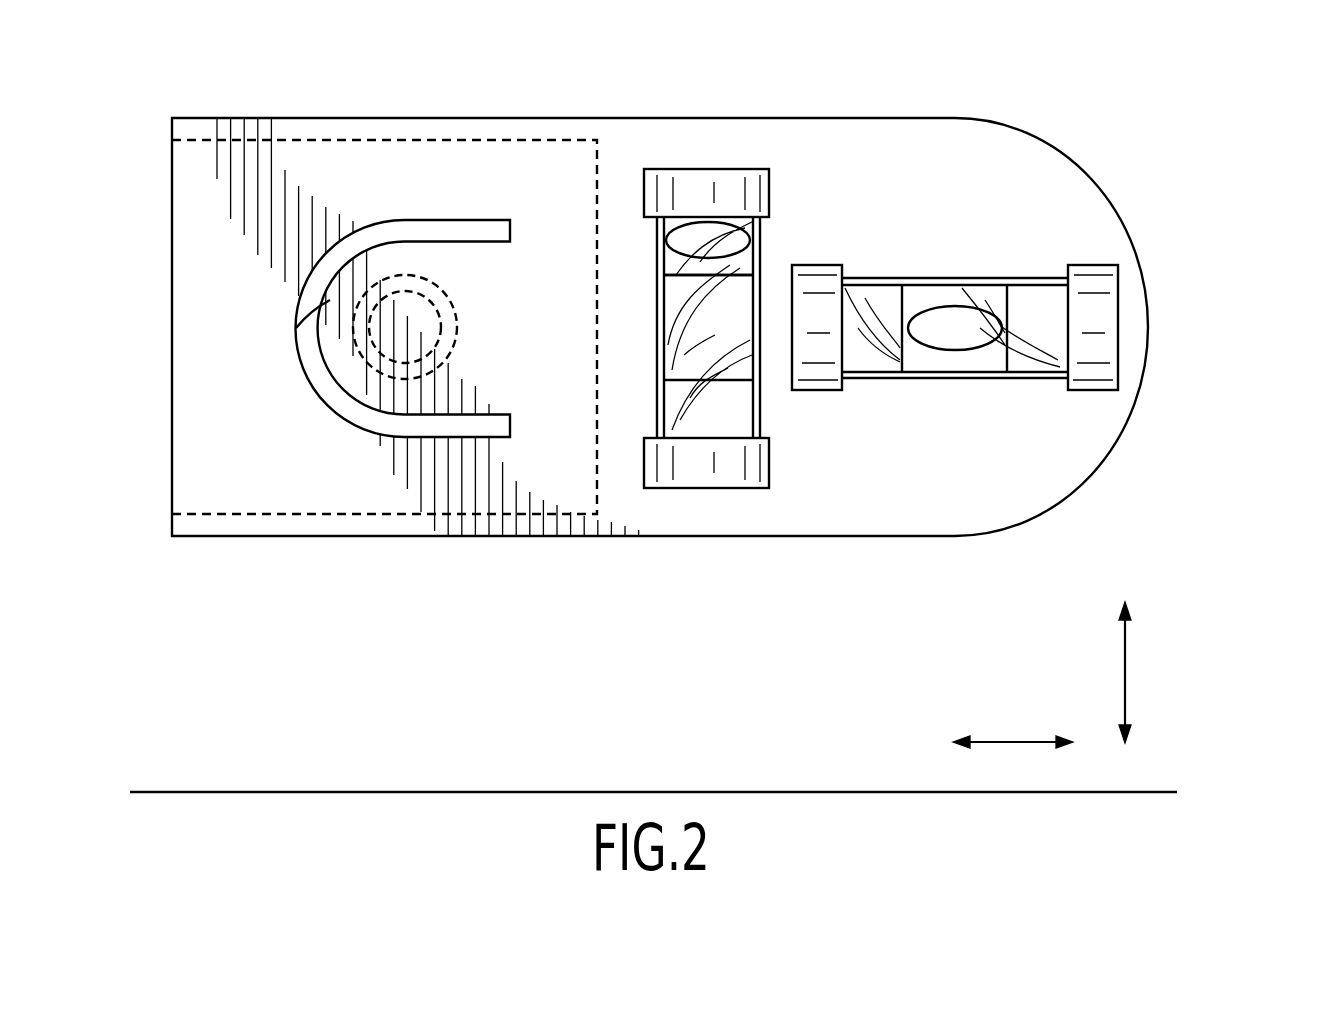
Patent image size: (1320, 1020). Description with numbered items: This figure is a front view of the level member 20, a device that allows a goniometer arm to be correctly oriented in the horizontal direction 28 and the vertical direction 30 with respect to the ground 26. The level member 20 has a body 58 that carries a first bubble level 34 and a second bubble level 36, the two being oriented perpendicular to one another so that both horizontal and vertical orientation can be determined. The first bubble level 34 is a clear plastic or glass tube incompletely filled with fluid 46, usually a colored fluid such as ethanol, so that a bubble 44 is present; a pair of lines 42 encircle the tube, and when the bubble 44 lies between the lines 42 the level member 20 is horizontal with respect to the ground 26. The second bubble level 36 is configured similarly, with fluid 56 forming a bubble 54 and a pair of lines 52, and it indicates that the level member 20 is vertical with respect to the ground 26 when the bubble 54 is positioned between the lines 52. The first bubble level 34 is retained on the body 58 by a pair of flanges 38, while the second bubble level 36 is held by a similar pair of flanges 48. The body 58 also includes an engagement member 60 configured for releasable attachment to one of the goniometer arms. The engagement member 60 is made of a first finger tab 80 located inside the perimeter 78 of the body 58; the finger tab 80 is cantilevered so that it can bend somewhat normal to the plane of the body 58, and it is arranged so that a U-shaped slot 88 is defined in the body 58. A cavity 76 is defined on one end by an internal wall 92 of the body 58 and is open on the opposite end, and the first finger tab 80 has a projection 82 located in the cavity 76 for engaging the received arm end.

The level member 20 is at (1190, 191).
The ground 26 is at (183, 792).
The horizontal direction 28 is at (1015, 742).
The vertical direction 30 is at (1125, 683).
The first bubble level 34 is at (1003, 330).
The second bubble level 36 is at (715, 330).
The flanges 38 is at (816, 382).
The lines 42 is at (1010, 310).
The bubble 44 is at (958, 305).
The fluid 46 is at (967, 362).
The flanges 48 is at (768, 178).
The lines 52 is at (726, 270).
The bubble 54 is at (683, 224).
The fluid 56 is at (733, 422).
The body 58 is at (1000, 128).
The engagement member 60 is at (337, 484).
The cavity 76 is at (232, 416).
The perimeter 78 is at (647, 118).
The first finger tab 80 is at (320, 318).
The projection 82 is at (450, 290).
The U-shaped slot 88 is at (388, 232).
The internal wall 92 is at (597, 470).